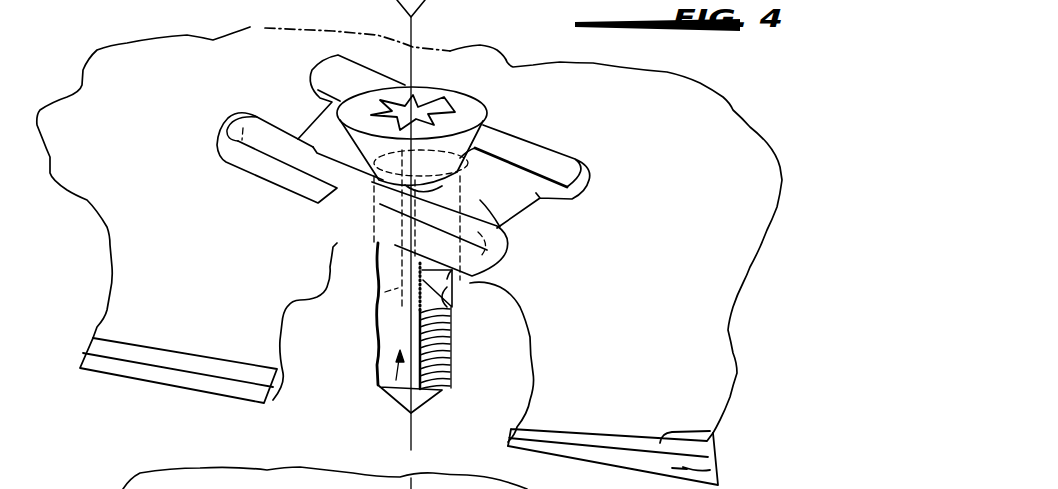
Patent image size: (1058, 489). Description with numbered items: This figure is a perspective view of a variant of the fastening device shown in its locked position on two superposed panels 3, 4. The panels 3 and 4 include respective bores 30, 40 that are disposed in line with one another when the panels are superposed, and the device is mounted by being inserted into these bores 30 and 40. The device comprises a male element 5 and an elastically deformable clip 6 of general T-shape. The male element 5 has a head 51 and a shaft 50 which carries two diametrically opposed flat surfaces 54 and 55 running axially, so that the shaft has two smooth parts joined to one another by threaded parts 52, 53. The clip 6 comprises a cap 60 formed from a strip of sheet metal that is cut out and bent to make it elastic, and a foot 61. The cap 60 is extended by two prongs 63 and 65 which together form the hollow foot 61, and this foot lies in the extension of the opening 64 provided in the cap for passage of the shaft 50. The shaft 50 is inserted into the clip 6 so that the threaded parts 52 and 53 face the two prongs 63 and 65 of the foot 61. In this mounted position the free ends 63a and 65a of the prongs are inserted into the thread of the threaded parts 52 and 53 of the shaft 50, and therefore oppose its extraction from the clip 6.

The panel 3 is at (713, 433).
The panel 4 is at (710, 470).
The male element 5 is at (508, 105).
The clip 6 is at (597, 147).
The bore 30 is at (480, 200).
The bore 40 is at (505, 233).
The shaft 50 is at (475, 365).
The head 51 is at (450, 92).
The threaded part 52 is at (453, 388).
The threaded part 53 is at (378, 360).
The flat surface 54 is at (382, 387).
The flat surface 55 is at (452, 348).
The cap 60 is at (272, 97).
The foot 61 is at (338, 240).
The prong 63 is at (368, 262).
The free end 63a is at (375, 305).
The opening 64 is at (490, 125).
The prong 65 is at (447, 279).
The free end 65a is at (455, 292).